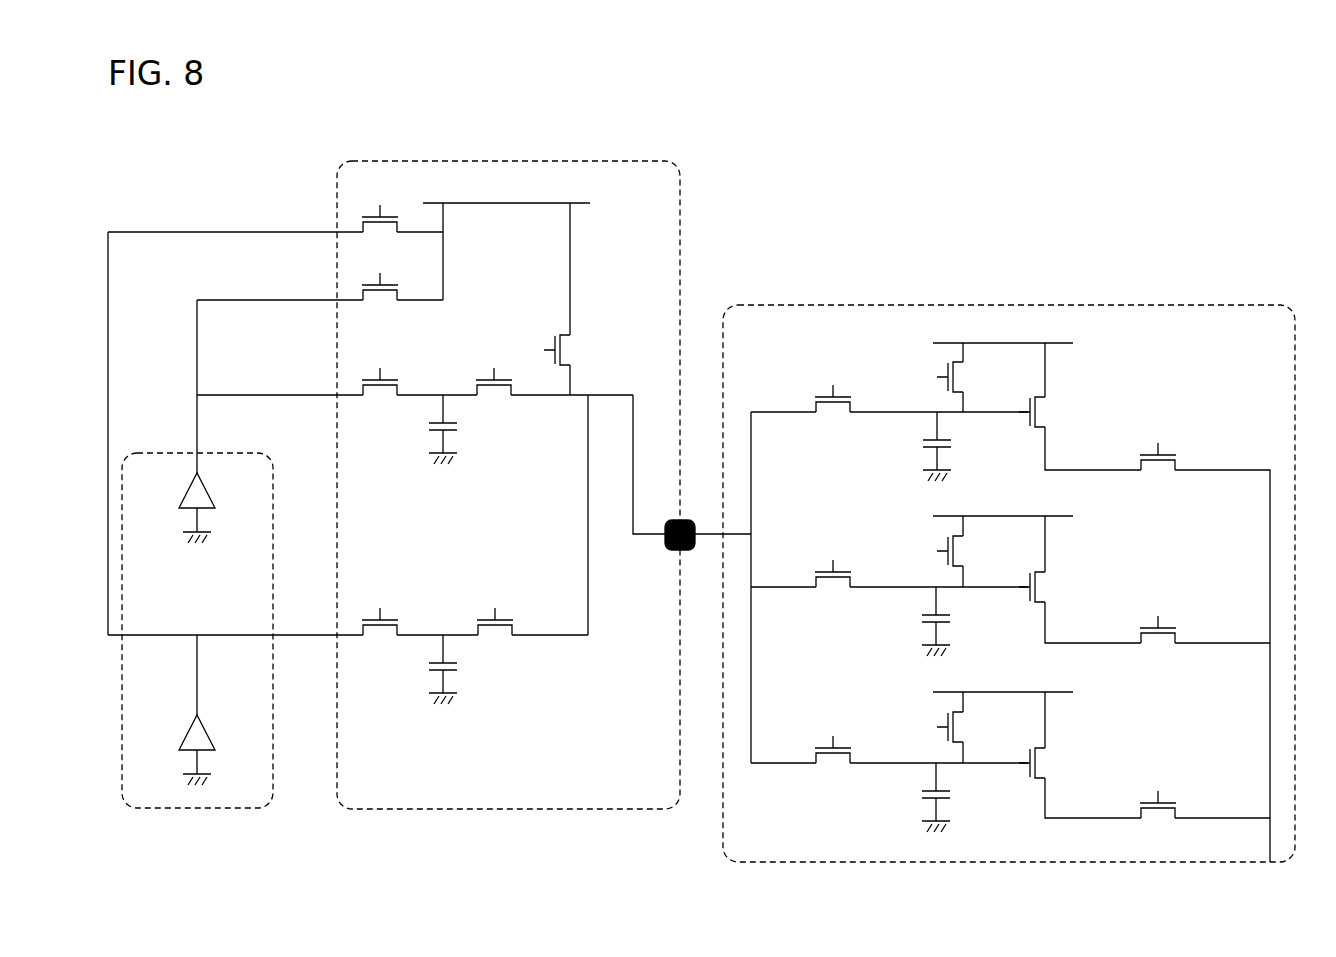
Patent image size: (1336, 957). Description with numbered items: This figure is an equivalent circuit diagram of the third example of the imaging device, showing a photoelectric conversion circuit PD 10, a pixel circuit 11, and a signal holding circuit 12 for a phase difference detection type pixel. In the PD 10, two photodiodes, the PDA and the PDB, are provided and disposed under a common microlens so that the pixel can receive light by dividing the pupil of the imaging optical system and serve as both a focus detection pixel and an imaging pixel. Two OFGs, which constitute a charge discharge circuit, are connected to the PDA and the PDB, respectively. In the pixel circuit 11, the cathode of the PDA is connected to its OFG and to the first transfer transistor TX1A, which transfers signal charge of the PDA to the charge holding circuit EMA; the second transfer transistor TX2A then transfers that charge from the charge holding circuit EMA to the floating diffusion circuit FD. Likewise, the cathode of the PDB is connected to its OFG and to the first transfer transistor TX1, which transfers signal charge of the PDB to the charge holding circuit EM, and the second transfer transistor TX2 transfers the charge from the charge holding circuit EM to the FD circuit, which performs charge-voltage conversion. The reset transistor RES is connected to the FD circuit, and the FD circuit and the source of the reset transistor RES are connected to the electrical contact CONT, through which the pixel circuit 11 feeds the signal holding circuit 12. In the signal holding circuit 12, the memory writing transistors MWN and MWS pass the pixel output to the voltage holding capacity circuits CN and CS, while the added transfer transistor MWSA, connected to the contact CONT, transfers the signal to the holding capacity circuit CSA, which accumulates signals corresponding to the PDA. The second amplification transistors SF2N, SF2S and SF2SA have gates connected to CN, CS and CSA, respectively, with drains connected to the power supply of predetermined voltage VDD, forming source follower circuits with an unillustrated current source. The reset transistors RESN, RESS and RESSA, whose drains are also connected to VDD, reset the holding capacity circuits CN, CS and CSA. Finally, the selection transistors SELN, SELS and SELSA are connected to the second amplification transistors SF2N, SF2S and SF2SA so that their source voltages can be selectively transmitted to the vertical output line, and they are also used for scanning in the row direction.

The PD 10 is at (197, 574).
The pixel circuit 11 is at (429, 503).
The signal holding circuit 12 is at (1009, 567).
The photodiode PDB is at (176, 421).
The photodiode PDA is at (176, 710).
The element OFG is at (379, 266).
The reset transistor RES is at (579, 350).
The first transfer transistor TX1 is at (379, 394).
The second transfer transistor TX2 is at (494, 394).
The first transfer transistor TX1A is at (379, 635).
The second transfer transistor TX2A is at (495, 635).
The charge holding circuit EM is at (427, 429).
The charge holding circuit EMA is at (421, 669).
The floating diffusion circuit FD is at (568, 409).
The power supply of predetermined voltage VDD is at (567, 191).
The electrical contact CONT is at (673, 560).
The transistor for memory writing MWN is at (834, 411).
The transistor for memory writing MWS is at (832, 586).
The transfer transistor MWSA is at (832, 762).
The voltage holding capacity circuit CN is at (922, 446).
The voltage holding capacity circuit CS is at (921, 621).
The holding capacity circuit CSA is at (915, 797).
The reset transistor RESN is at (976, 377).
The reset transistor RESS is at (975, 551).
The reset transistor RESSA is at (981, 727).
The second amplification transistor SF2N is at (1059, 412).
The second amplification transistor SF2S is at (1058, 587).
The second amplification transistor SF2SA is at (1062, 763).
The selection transistor SELN is at (1156, 468).
The selection transistor SELS is at (1155, 642).
The selection transistor SELSA is at (1157, 817).